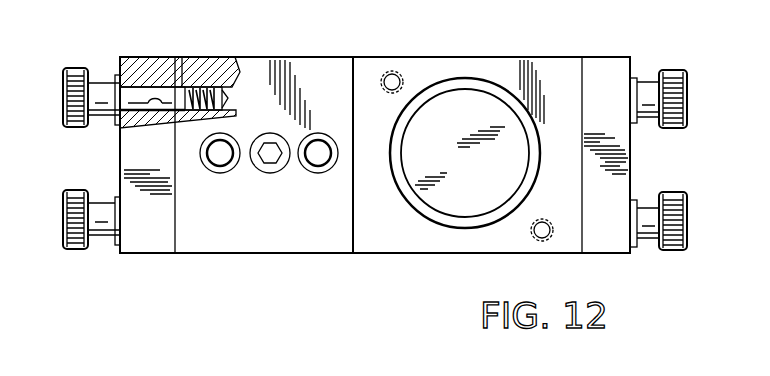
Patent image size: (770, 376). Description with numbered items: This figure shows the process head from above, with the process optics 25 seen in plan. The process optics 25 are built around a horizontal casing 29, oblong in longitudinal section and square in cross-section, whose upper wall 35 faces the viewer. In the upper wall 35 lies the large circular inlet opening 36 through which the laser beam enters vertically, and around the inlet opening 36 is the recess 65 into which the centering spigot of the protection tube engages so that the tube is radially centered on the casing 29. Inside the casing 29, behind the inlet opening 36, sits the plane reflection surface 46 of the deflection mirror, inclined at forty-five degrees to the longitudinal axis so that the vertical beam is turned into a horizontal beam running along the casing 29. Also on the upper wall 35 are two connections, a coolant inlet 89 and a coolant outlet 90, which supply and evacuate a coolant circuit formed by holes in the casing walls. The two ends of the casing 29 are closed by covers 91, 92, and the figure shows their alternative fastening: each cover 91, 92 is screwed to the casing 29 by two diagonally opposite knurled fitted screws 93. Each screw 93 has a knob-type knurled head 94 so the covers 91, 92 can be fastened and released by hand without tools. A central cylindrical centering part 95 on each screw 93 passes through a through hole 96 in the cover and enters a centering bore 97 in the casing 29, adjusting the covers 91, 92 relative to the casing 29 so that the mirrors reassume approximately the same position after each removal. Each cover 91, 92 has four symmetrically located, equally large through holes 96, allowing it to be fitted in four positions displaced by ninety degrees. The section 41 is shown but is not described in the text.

The process optics 25 is at (296, 270).
The casing 29 is at (568, 80).
The upper wall 35 is at (414, 75).
The inlet opening 36 is at (457, 198).
The block section 41 is at (355, 57).
The plane reflection surface 46 is at (447, 120).
The recess 65 is at (498, 95).
The coolant inlet 89 is at (220, 163).
The coolant outlet 90 is at (320, 163).
The cover 91 is at (133, 155).
The cover 92 is at (612, 190).
The knurled fitted screw 93 is at (110, 93).
The knurled head 94 is at (76, 97).
The centering part 95 is at (148, 92).
The through hole 96 is at (128, 128).
The centering bore 97 is at (180, 83).